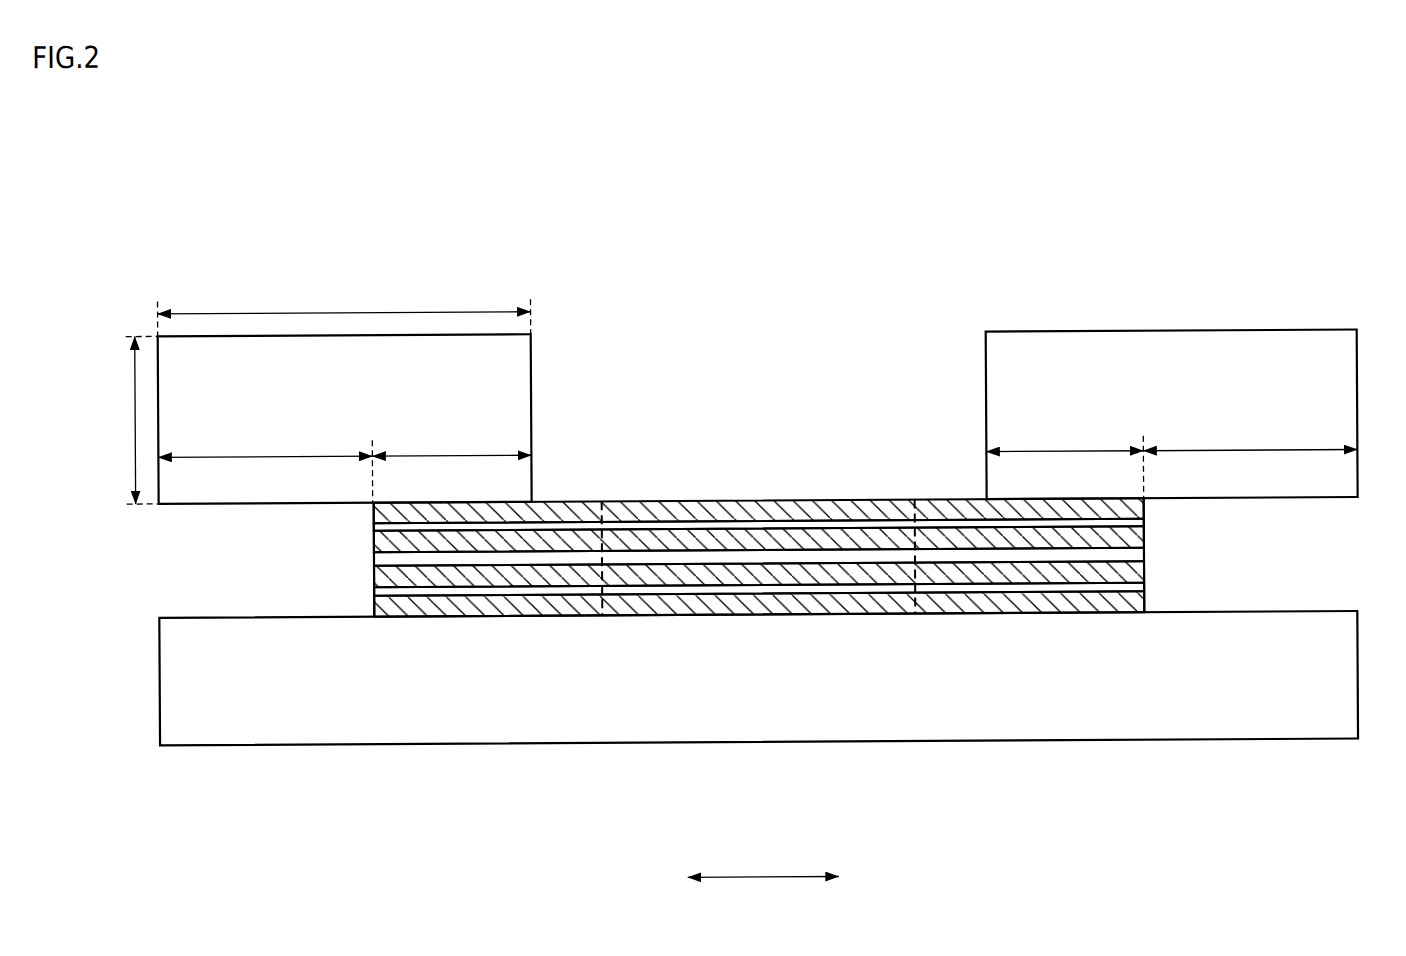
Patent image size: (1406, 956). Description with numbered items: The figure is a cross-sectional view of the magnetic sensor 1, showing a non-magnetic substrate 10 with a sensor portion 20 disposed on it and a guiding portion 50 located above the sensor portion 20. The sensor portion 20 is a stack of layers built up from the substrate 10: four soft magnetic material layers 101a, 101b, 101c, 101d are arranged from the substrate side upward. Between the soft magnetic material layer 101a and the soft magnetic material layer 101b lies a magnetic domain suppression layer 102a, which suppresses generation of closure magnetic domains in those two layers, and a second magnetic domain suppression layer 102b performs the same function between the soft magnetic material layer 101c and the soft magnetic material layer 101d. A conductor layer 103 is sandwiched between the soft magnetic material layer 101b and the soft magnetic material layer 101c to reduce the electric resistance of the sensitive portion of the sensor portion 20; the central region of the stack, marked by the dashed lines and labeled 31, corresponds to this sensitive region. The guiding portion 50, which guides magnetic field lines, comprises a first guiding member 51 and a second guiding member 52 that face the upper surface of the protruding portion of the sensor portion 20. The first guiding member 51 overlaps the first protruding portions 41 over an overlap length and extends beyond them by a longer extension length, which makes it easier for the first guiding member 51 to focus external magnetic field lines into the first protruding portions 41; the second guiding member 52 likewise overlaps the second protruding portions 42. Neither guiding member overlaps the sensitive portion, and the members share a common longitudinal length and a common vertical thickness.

The magnetic sensor 1 is at (1205, 139).
The non-magnetic substrate 10 is at (1319, 743).
The sensor portion 20 is at (1318, 555).
The laminated portion 31 is at (894, 489).
The first protruding portions 41 is at (353, 581).
The second protruding portions 42 is at (1165, 580).
The guiding portion 50 is at (1337, 278).
The first guiding member 51 is at (532, 357).
The second guiding member 52 is at (1222, 333).
The soft magnetic material layer 101a is at (640, 605).
The soft magnetic material layer 101b is at (837, 574).
The soft magnetic material layer 101c is at (837, 542).
The soft magnetic material layer 101d is at (633, 512).
The magnetic domain suppression layer 102a is at (732, 591).
The magnetic domain suppression layer 102b is at (723, 523).
The conductor layer 103 is at (1144, 552).